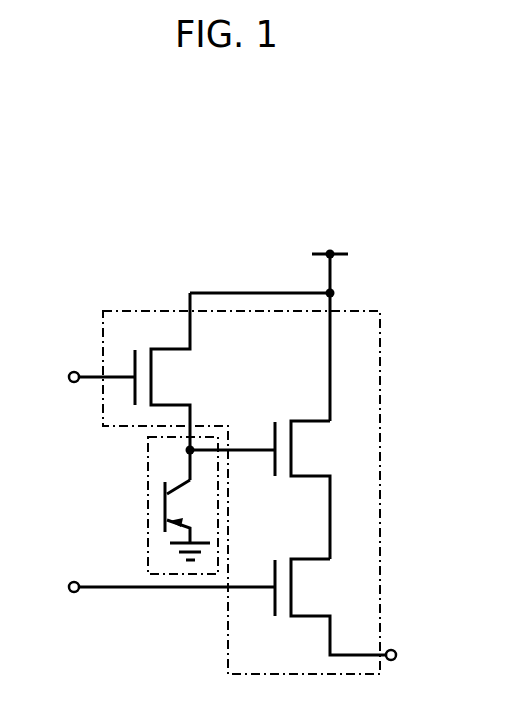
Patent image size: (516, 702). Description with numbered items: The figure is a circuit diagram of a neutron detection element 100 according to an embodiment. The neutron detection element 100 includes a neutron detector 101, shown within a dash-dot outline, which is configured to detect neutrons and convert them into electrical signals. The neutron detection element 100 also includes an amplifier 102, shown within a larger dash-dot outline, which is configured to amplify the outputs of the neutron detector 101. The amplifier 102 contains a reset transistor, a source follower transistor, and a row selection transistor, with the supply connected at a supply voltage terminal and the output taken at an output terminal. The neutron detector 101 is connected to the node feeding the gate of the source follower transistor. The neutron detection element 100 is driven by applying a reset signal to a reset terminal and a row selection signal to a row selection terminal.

The neutron detection element 100 is at (227, 237).
The neutron detector 101 is at (148, 481).
The amplifier 102 is at (168, 309).